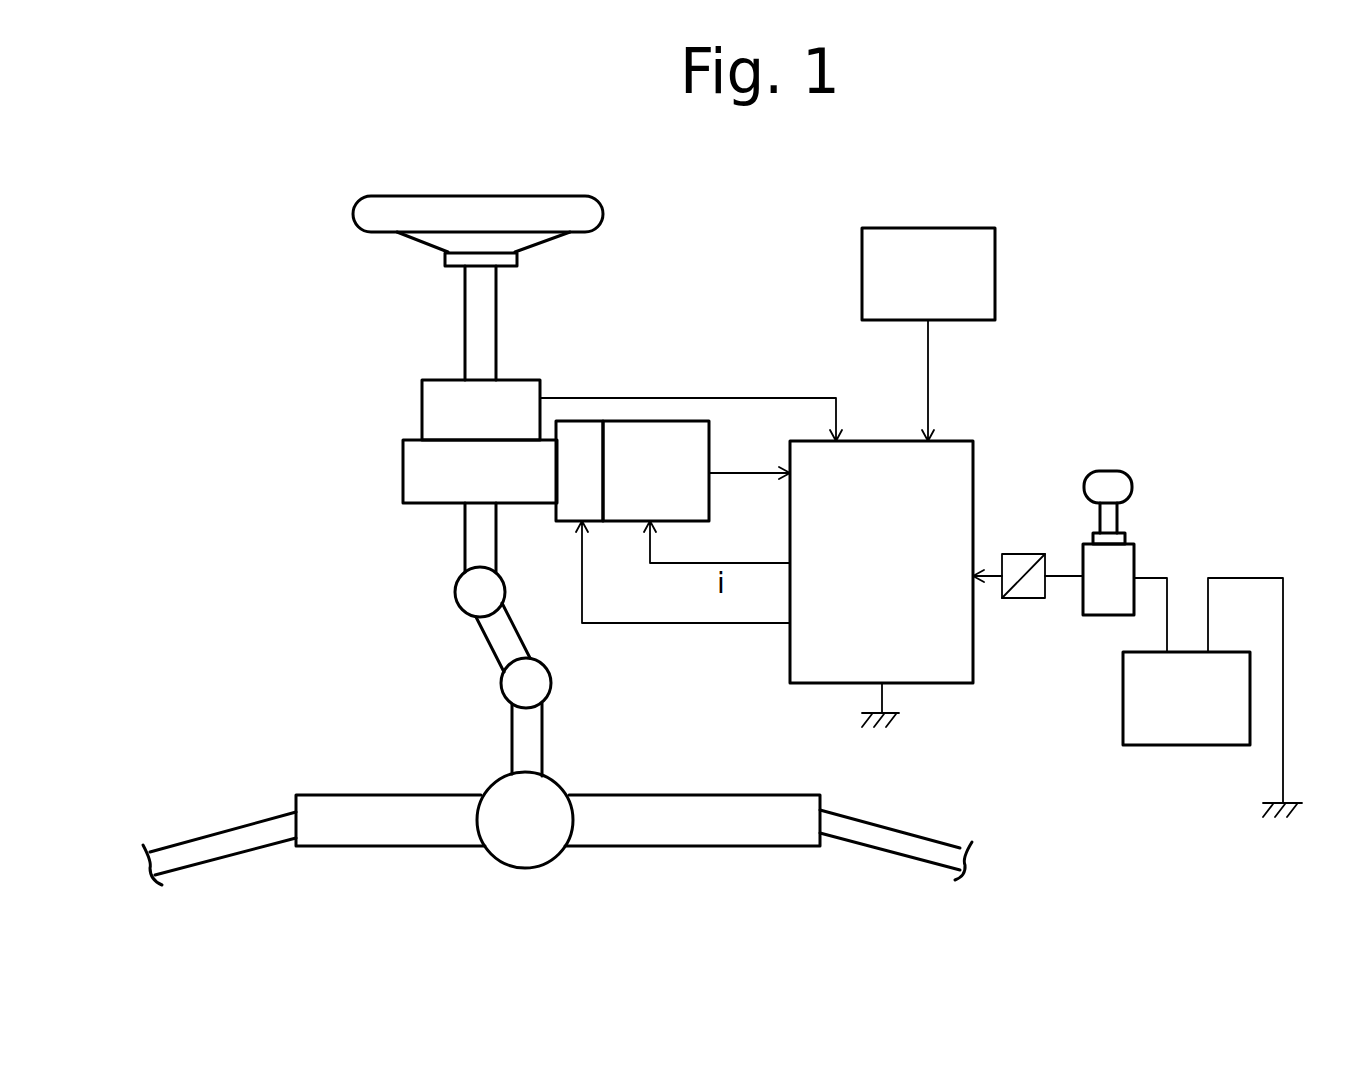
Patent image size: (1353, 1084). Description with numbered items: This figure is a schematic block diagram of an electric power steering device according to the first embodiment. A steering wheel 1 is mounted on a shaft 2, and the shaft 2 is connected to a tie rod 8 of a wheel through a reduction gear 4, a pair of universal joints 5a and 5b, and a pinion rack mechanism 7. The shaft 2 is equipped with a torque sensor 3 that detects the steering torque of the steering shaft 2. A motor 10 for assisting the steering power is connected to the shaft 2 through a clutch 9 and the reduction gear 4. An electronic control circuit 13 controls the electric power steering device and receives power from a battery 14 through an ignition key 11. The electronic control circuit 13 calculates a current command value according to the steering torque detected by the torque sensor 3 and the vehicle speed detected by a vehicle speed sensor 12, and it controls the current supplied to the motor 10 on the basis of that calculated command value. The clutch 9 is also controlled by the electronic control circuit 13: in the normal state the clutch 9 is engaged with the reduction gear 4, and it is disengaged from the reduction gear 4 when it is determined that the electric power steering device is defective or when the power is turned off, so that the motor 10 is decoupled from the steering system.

The steering wheel 1 is at (595, 212).
The shaft 2 is at (465, 332).
The torque sensor 3 is at (423, 412).
The reduction gear 4 is at (403, 477).
The universal joint 5a is at (456, 597).
The universal joint 5b is at (502, 690).
The pinion rack mechanism 7 is at (573, 770).
The tie rod 8 is at (893, 823).
The clutch 9 is at (578, 420).
The motor 10 is at (657, 420).
The ignition key 11 is at (1132, 483).
The vehicle speed sensor 12 is at (963, 228).
The electronic control circuit 13 is at (957, 439).
The battery 14 is at (1158, 747).